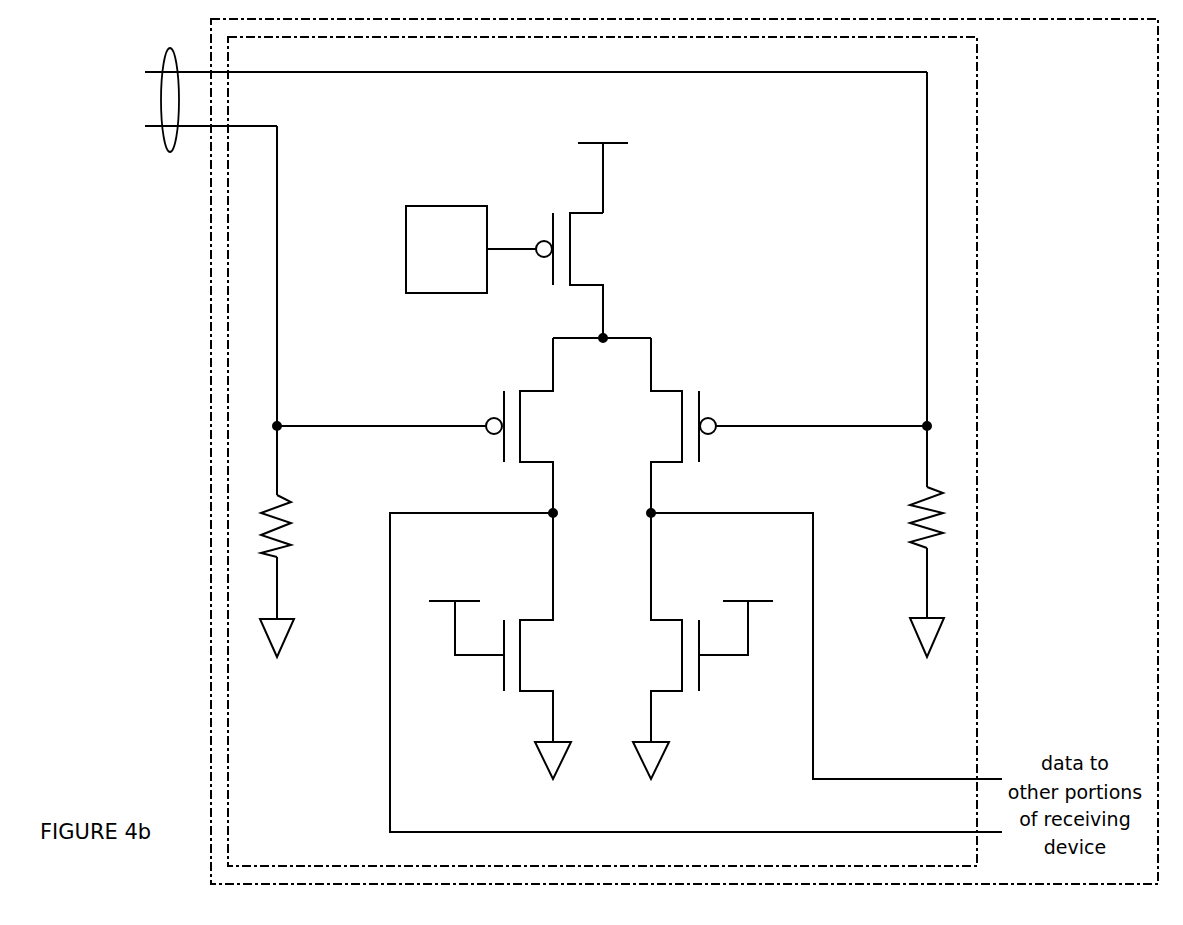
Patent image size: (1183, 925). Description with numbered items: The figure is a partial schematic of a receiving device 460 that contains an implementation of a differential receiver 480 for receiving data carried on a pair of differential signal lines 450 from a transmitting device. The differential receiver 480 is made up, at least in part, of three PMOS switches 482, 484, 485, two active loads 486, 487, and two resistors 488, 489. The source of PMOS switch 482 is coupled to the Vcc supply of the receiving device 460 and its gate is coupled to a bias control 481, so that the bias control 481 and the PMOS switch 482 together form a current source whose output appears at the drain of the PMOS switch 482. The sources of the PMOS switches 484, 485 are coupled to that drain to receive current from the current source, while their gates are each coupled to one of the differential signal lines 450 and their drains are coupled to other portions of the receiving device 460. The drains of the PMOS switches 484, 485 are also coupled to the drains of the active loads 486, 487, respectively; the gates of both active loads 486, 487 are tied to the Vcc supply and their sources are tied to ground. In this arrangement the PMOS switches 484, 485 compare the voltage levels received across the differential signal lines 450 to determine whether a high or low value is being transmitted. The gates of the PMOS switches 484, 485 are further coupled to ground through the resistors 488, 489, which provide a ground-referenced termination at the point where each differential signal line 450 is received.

The differential signal lines 450 is at (170, 152).
The receiving device 460 is at (1041, 465).
The differential receiver 480 is at (291, 820).
The bias control 481 is at (430, 290).
The PMOS switch 482 is at (583, 262).
The PMOS switch 484 is at (535, 441).
The PMOS switch 485 is at (633, 441).
The active load 486 is at (535, 669).
The active load 487 is at (633, 669).
The resistor 488 is at (290, 540).
The resistor 489 is at (910, 540).